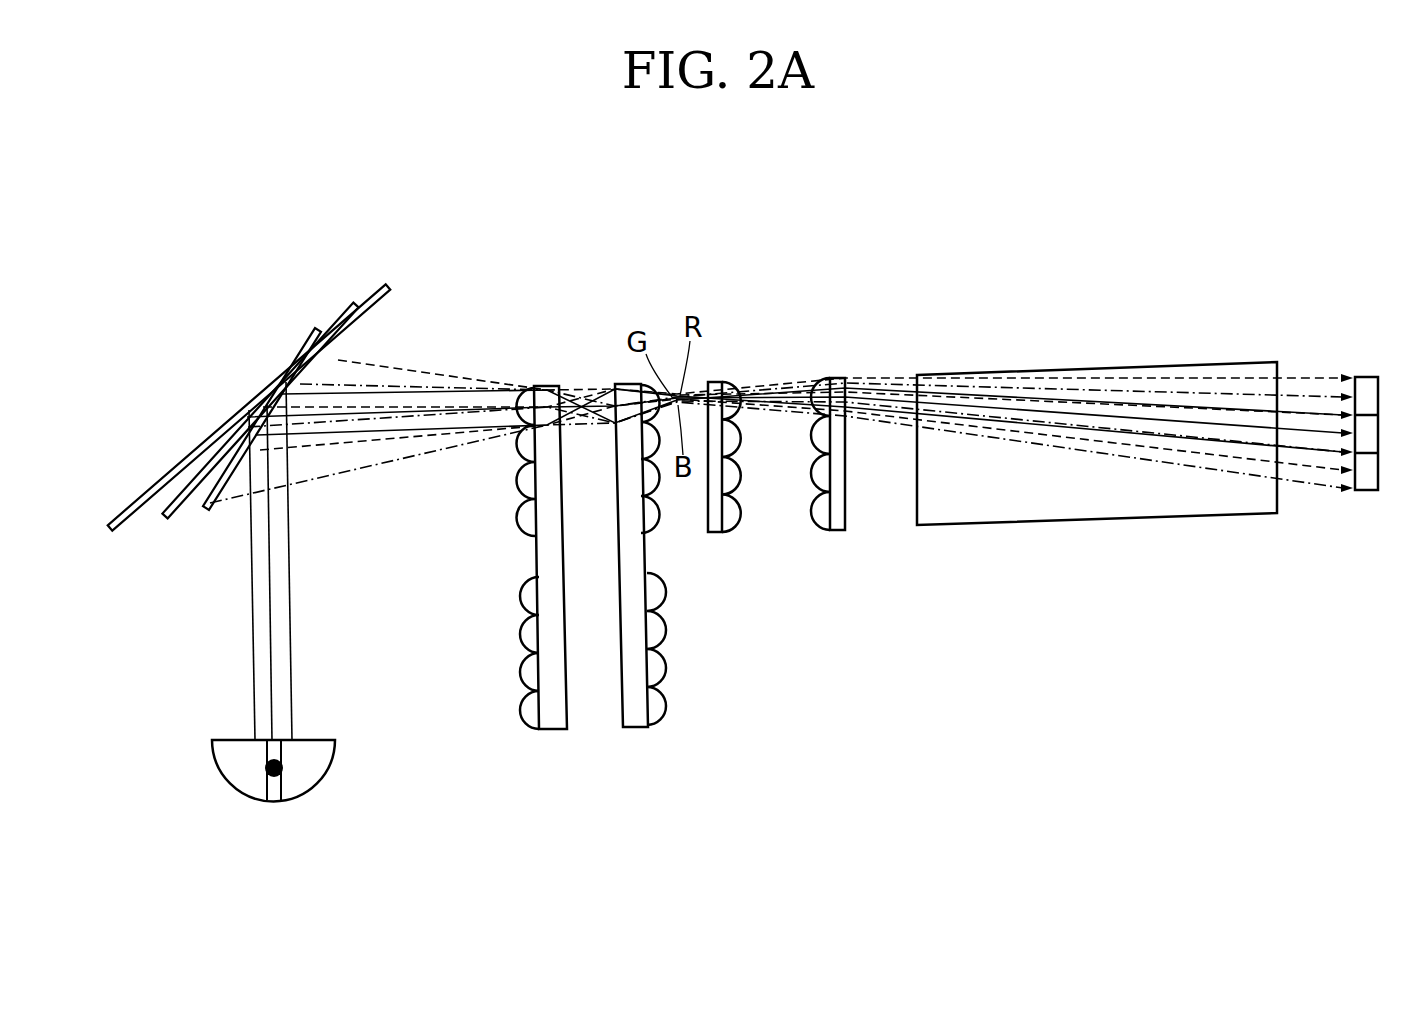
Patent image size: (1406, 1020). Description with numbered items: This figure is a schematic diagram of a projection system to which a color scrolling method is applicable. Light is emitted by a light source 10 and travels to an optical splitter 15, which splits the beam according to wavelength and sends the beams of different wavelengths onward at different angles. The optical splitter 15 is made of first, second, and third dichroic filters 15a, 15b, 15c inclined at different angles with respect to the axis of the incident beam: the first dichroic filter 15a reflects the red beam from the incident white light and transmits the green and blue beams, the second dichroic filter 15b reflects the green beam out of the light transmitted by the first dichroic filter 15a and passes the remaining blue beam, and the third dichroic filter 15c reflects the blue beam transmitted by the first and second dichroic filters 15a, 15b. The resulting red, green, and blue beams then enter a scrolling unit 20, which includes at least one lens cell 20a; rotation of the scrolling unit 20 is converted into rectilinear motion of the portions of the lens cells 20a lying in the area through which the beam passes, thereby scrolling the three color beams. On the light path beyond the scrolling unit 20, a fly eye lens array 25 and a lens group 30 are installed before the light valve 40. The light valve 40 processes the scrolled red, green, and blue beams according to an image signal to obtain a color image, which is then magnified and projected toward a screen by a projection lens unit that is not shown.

The light source 10 is at (277, 803).
The optical splitter 15 is at (238, 474).
The first dichroic filter 15a is at (258, 465).
The second dichroic filter 15b is at (166, 521).
The third dichroic filter 15c is at (113, 535).
The scrolling unit 20 is at (555, 731).
The lens cell 20a is at (518, 678).
The fly eye lens array 25 is at (717, 534).
The lens group 30 is at (1275, 352).
The light valve 40 is at (1372, 340).